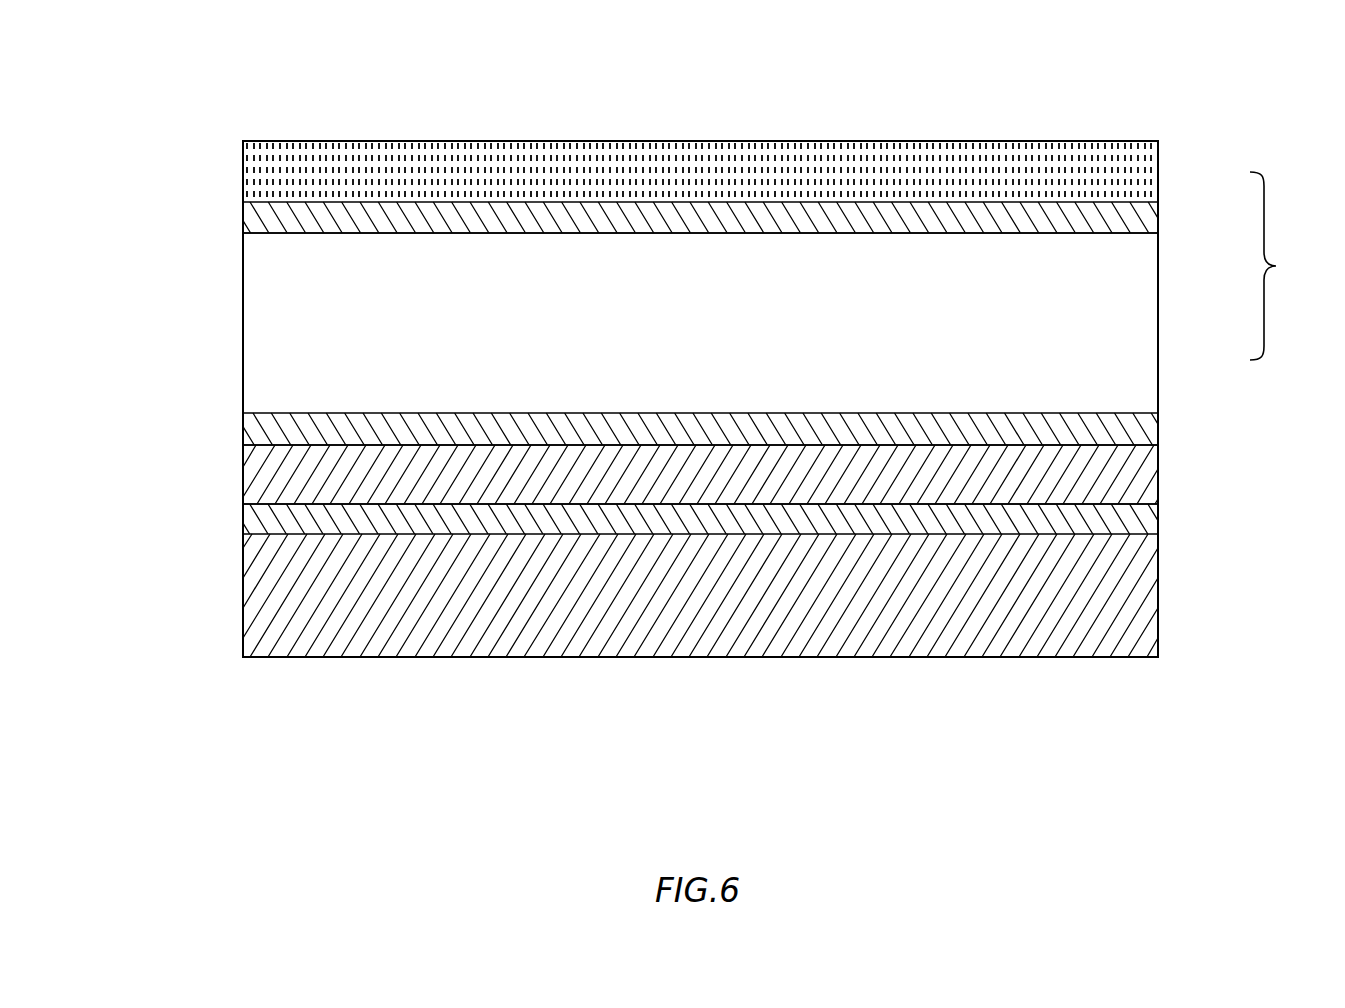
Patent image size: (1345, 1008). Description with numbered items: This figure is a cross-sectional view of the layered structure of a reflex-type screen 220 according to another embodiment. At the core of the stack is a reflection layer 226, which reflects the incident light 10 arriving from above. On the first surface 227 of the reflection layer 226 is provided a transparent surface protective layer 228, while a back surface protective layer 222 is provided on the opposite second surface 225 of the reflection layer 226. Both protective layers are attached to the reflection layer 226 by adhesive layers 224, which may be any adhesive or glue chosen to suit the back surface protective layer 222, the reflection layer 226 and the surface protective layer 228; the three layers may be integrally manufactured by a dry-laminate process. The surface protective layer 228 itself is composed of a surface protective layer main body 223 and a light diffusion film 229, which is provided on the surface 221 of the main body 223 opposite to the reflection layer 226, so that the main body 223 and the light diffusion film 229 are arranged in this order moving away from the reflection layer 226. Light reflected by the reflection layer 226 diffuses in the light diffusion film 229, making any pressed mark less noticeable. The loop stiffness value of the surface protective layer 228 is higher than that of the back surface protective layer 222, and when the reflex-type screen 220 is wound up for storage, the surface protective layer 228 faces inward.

The incident light 10 is at (946, 90).
The reflex-type screen 220 is at (722, 778).
The surface 221 is at (711, 240).
The back surface protective layer 222 is at (1160, 598).
The surface protective layer main body 223 is at (1160, 327).
The adhesive layer 224 is at (1006, 220).
The second surface 225 is at (268, 493).
The reflection layer 226 is at (1160, 478).
The first surface 227 is at (260, 452).
The surface protective layer 228 is at (1287, 266).
The light diffusion film 229 is at (1160, 175).